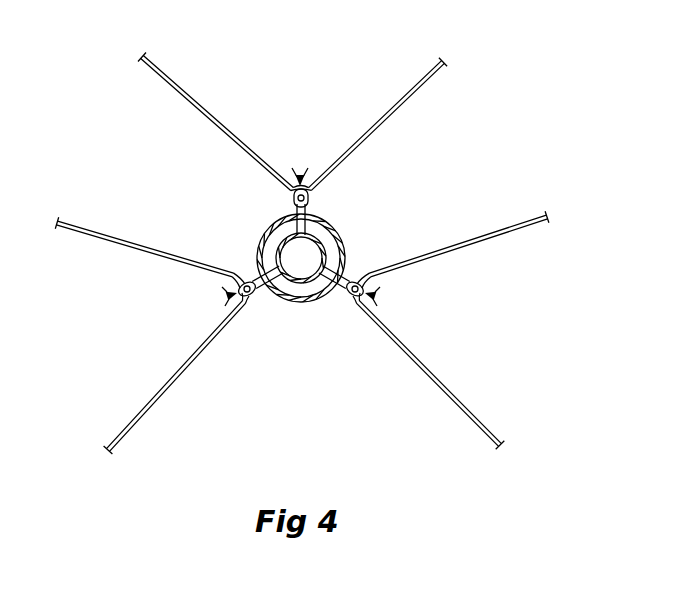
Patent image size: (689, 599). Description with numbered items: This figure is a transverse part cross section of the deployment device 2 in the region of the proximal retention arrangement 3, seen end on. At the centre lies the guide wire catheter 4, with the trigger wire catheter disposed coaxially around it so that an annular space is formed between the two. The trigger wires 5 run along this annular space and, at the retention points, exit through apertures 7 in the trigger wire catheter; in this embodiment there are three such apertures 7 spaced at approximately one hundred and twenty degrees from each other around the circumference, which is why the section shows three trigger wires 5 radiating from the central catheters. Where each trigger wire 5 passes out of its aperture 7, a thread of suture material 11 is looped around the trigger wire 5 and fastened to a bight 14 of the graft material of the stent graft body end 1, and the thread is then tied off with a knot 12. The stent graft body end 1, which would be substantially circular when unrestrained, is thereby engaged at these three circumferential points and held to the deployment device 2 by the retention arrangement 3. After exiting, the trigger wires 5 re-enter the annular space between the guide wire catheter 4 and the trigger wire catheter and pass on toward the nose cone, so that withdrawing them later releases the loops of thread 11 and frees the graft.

The stent graft body end 1 is at (200, 106).
The deployment device 2 is at (298, 338).
The retention arrangement 3 is at (282, 296).
The guide wire catheter 4 is at (310, 283).
The trigger wires 5 is at (259, 269).
The apertures 7 is at (311, 201).
The thread of suture material 11 is at (293, 191).
The knot 12 is at (300, 176).
The bight of graft material 14 is at (352, 297).